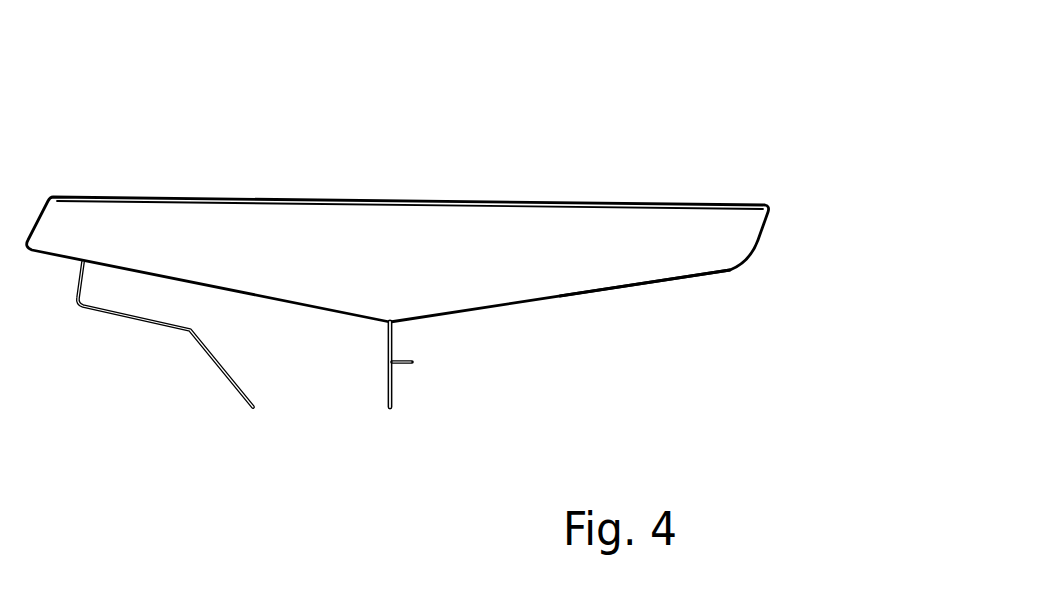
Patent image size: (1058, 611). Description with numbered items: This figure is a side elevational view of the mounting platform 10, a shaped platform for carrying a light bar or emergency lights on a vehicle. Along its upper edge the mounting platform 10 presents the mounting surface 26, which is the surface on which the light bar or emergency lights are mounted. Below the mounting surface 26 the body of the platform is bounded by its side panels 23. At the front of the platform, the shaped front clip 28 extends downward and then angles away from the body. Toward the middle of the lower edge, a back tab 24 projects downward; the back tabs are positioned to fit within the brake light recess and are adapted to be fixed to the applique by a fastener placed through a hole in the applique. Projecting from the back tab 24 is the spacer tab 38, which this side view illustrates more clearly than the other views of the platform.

The mounting platform 10 is at (790, 205).
The mounting surface 26 is at (490, 202).
The side panels 23 is at (685, 267).
The shaped front clip 28 is at (157, 325).
The back tab 24 is at (403, 403).
The spacer tab 38 is at (420, 362).